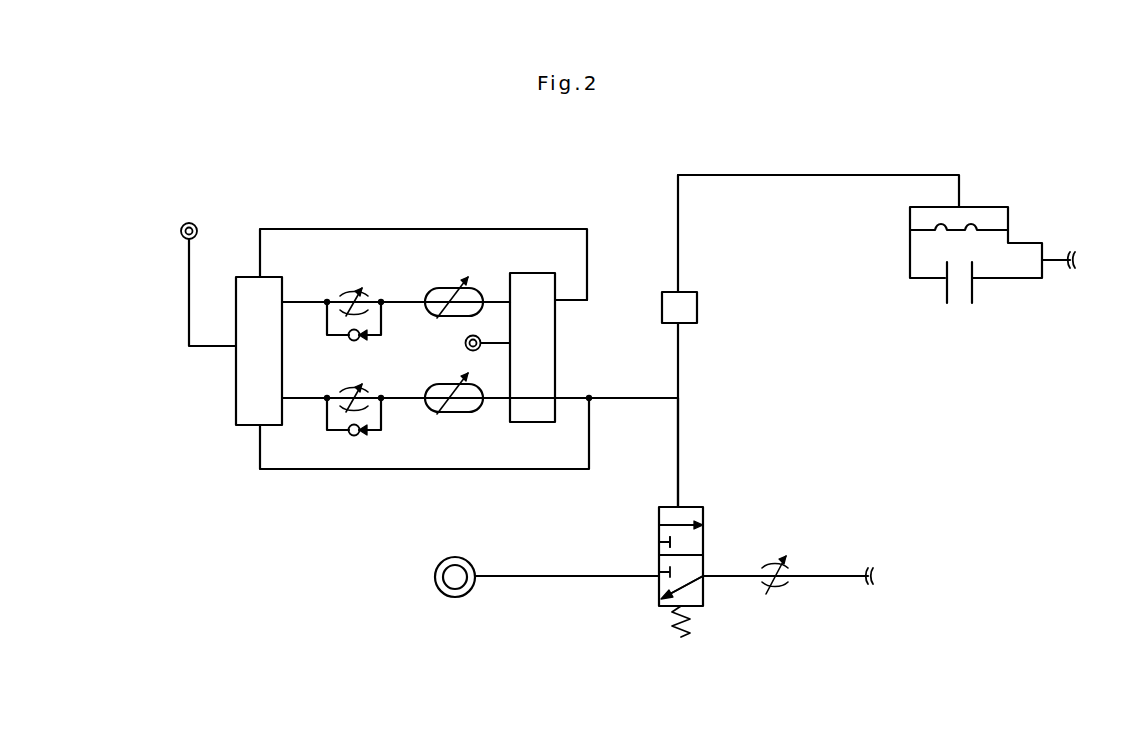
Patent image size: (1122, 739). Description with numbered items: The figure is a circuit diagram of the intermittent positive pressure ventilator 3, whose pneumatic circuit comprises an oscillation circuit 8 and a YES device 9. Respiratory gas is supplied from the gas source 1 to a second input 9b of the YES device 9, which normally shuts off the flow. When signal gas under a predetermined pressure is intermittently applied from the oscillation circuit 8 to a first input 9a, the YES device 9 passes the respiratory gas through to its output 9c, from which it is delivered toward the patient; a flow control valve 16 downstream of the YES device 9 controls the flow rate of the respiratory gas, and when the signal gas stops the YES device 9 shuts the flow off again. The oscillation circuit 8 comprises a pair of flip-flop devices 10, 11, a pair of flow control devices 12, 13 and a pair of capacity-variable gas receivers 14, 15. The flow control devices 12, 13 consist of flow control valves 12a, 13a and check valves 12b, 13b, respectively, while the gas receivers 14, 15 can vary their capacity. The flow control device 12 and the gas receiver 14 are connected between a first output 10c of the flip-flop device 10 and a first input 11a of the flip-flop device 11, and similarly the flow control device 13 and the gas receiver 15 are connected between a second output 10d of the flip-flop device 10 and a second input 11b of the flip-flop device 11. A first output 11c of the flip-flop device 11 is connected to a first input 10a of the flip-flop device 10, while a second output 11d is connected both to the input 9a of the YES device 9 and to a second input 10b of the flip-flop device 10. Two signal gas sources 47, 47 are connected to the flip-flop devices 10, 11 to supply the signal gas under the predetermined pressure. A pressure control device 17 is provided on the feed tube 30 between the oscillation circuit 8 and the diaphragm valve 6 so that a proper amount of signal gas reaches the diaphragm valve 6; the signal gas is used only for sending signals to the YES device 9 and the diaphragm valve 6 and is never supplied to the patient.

The gas source 1 is at (465, 564).
The intermittent positive pressure ventilator 3 is at (578, 192).
The diaphragm valve 6 is at (998, 207).
The oscillation circuit 8 is at (418, 222).
The YES device 9 is at (703, 545).
The first input 9a is at (684, 504).
The second input 9b is at (659, 572).
The output 9c is at (703, 582).
The flip-flop device 10 is at (236, 380).
The first input 10a is at (260, 275).
The second input 10b is at (260, 440).
The first output 10c is at (282, 301).
The second output 10d is at (282, 398).
The flip-flop device 11 is at (555, 350).
The first input 11a is at (510, 300).
The second input 11b is at (510, 400).
The first output 11c is at (558, 303).
The second output 11d is at (564, 398).
The flow control device 12 is at (327, 318).
The flow control valve 12a is at (353, 293).
The check valve 12b is at (354, 340).
The flow control device 13 is at (327, 420).
The flow control valve 13a is at (363, 392).
The check valve 13b is at (354, 435).
The capacity-variable gas receiver 14 is at (440, 288).
The capacity-variable gas receiver 15 is at (463, 410).
The flow control valve 16 is at (785, 564).
The pressure control device 17 is at (697, 305).
The feed tube 30 is at (829, 175).
The signal gas source 47 is at (189, 223).